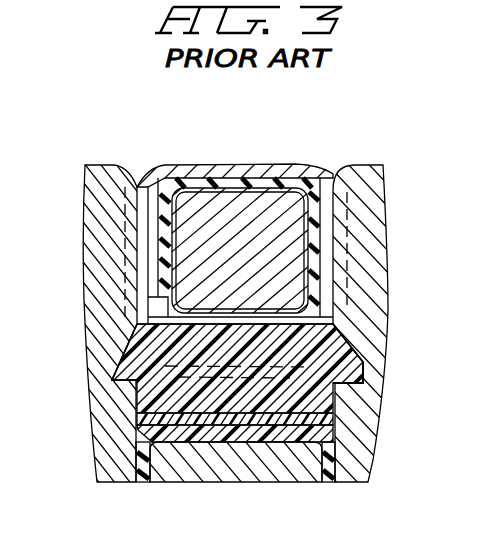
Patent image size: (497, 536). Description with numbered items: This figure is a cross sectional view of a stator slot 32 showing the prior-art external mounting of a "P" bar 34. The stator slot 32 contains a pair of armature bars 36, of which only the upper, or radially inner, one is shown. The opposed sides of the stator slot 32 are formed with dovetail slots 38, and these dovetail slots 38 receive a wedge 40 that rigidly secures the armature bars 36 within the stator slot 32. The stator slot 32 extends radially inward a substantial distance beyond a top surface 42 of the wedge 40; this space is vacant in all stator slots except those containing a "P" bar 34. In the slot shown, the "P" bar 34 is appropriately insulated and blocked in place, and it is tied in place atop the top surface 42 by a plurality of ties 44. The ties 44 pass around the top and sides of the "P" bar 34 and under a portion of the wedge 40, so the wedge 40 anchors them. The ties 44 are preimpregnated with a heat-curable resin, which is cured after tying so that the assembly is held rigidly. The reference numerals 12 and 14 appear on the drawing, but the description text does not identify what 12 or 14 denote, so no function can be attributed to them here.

The prior art cell assembly 12 is at (149, 134).
The container body 14 is at (368, 166).
The stator slot 32 is at (338, 434).
The "P" bar 34 is at (253, 200).
The armature bars 36 is at (158, 460).
The dovetail slots 38 is at (126, 352).
The wedge 40 is at (342, 352).
The top surface 42 is at (331, 318).
The ties 44 is at (311, 176).